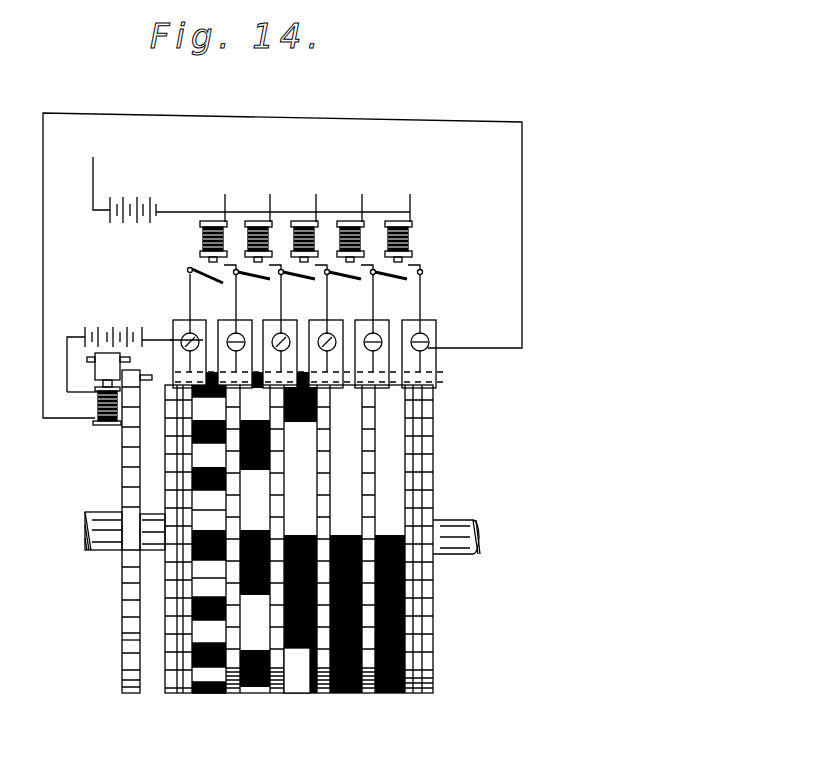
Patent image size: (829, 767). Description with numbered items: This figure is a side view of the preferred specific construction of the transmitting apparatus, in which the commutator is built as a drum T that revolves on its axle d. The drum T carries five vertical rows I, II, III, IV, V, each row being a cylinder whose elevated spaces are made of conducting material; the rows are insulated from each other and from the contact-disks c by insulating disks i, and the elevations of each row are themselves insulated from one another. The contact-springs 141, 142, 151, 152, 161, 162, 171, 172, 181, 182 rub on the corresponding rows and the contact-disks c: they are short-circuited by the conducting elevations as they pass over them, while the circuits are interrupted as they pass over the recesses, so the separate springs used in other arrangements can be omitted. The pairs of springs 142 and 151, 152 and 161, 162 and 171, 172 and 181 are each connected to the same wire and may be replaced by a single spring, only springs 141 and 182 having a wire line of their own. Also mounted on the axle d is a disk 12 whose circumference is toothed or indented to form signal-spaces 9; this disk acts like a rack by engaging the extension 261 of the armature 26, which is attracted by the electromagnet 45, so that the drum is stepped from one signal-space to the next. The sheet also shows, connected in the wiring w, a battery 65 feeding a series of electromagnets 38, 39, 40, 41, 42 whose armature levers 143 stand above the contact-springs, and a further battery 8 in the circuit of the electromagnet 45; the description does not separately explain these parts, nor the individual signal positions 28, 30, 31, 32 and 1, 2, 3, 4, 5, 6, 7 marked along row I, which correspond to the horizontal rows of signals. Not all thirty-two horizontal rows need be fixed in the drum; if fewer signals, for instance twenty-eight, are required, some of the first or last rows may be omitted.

The circuit wire loop w is at (405, 120).
The battery 65 is at (251, 190).
The electromagnet coil 38 is at (203, 240).
The electromagnet coil 39 is at (250, 228).
The electromagnet coil 40 is at (296, 228).
The electromagnet coil 41 is at (342, 228).
The electromagnet coil 42 is at (388, 228).
The armature lever 143 is at (188, 272).
The contact-spring 141 is at (182, 320).
The contact-spring 142 is at (236, 330).
The contact-spring 151 is at (251, 316).
The contact-spring 152 is at (281, 330).
The contact-spring 161 is at (298, 316).
The contact-spring 162 is at (327, 330).
The contact-spring 171 is at (345, 316).
The contact-spring 172 is at (373, 330).
The contact-spring 181 is at (391, 316).
The contact-spring 182 is at (420, 338).
The battery 8 is at (135, 345).
The armature 26 is at (96, 374).
The extension of the armature 261 is at (160, 350).
The electromagnet 45 is at (98, 405).
The disk 12 is at (122, 566).
The signal-spaces 9 is at (121, 592).
The shaft d is at (480, 530).
The drum T is at (412, 452).
The contact-disks c is at (436, 402).
The vertical row I is at (209, 555).
The vertical row II is at (255, 573).
The vertical row III is at (298, 556).
The vertical row IV is at (346, 630).
The vertical row V is at (390, 630).
The contact segment 28 is at (209, 407).
The contact segment 30 is at (209, 453).
The contact segment 31 is at (196, 488).
The contact segment 32 is at (200, 510).
The contact segment 1 is at (195, 556).
The contact segment 2 is at (198, 574).
The contact segment 3 is at (198, 600).
The contact segment 4 is at (198, 624).
The contact segment 5 is at (198, 648).
The contact segment 6 is at (198, 670).
The contact segment 7 is at (198, 690).
The insulating disks i is at (413, 700).